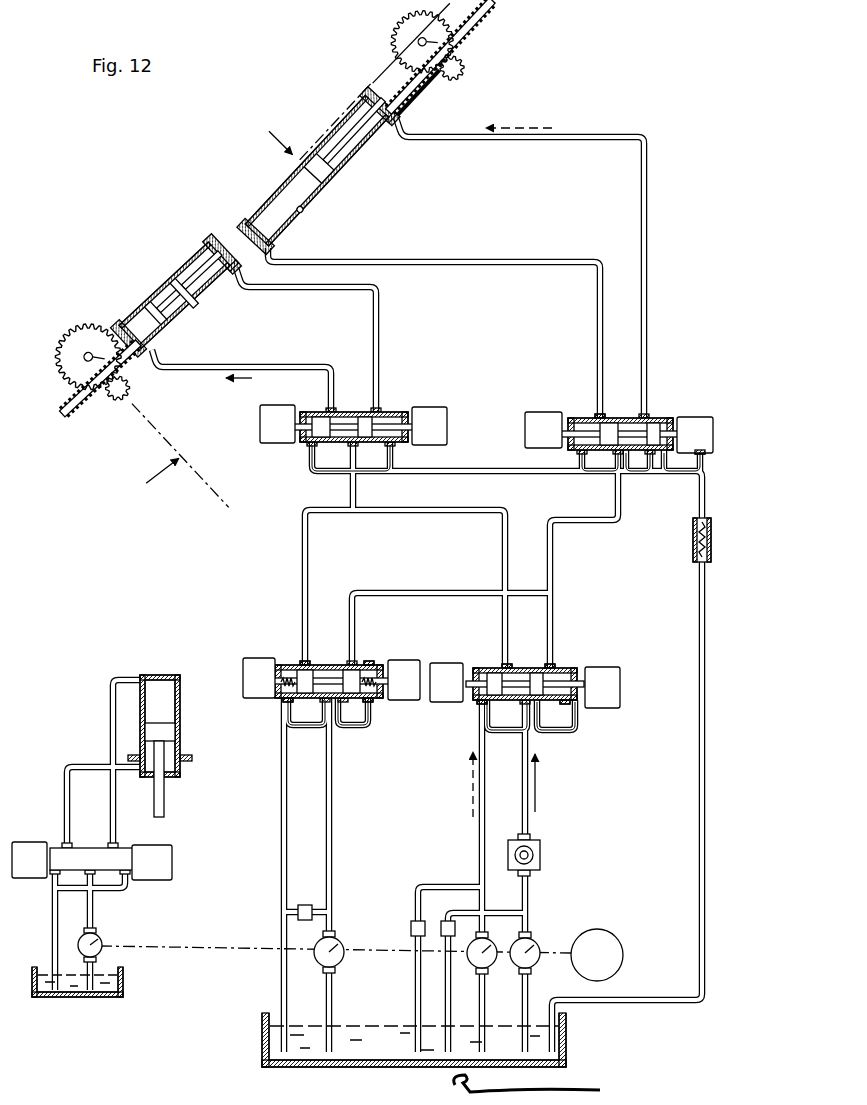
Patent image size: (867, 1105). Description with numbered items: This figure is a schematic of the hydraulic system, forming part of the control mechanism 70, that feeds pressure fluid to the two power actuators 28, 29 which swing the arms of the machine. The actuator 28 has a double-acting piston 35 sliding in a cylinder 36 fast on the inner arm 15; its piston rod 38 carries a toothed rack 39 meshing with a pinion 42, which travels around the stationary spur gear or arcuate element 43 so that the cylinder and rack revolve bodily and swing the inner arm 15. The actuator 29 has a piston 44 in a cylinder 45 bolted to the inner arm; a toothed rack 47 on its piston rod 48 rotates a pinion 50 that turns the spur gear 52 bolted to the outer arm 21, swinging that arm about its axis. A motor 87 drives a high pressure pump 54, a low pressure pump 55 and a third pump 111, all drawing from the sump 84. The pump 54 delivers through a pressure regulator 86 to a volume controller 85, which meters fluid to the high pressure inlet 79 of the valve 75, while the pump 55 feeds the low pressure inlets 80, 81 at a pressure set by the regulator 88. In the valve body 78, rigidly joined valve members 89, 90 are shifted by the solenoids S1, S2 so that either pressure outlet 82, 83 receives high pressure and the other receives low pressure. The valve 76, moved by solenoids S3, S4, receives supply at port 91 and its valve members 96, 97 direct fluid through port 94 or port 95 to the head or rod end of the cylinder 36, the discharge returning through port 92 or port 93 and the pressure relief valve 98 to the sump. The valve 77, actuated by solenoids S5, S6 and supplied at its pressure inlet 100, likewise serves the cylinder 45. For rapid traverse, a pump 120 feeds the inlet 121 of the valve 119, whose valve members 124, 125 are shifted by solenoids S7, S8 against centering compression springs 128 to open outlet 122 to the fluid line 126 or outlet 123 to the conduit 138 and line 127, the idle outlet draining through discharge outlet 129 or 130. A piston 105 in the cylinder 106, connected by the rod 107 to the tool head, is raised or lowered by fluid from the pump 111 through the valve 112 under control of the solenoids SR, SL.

The inner arm 15 is at (362, 97).
The outer arm 21 is at (206, 487).
The actuator 28 is at (274, 186).
The actuator 29 is at (159, 297).
The piston 35 is at (345, 178).
The cylinder 36 is at (306, 213).
The piston rod 38 is at (423, 90).
The toothed rack 39 is at (485, 25).
The pinion 42 is at (466, 75).
The arcuate element 43 is at (392, 40).
The piston 44 is at (200, 312).
The cylinder 45 is at (222, 290).
The toothed rack 47 is at (106, 408).
The piston rod 48 is at (150, 317).
The pinion 50 is at (134, 392).
The arcuate element 52 is at (62, 380).
The high pressure source 54 is at (534, 950).
The low pressure source 55 is at (488, 965).
The control mechanism 70 is at (694, 118).
The valve 75 is at (531, 671).
The valve 76 is at (632, 413).
The valve 77 is at (388, 404).
The valve body 78 is at (574, 704).
The high pressure inlet 79 is at (507, 716).
The low pressure inlet 80 is at (480, 705).
The low pressure inlet 81 is at (556, 716).
The pressure outlet 82 is at (505, 664).
The pressure outlet 83 is at (551, 664).
The sump 84 is at (568, 1046).
The volume controller 85 is at (542, 855).
The pressure regulator 86 is at (443, 921).
The motor 87 is at (604, 940).
The pressure regulator 88 is at (411, 930).
The valve member 89 is at (490, 673).
The valve member 90 is at (535, 673).
The port 91 is at (622, 455).
The port 92 is at (580, 455).
The port 93 is at (676, 452).
The port 94 is at (598, 414).
The port 95 is at (656, 420).
The valve member 96 is at (609, 421).
The valve member 97 is at (662, 455).
The pressure relief valve 98 is at (712, 548).
The pressure inlet 100 is at (350, 443).
The piston 105 is at (180, 737).
The cylinder 106 is at (180, 708).
The rod 107 is at (164, 808).
The third pump 111 is at (101, 943).
The valve 112 is at (130, 851).
The valve 119 is at (326, 665).
The pump 120 is at (339, 961).
The inlet 121 is at (306, 713).
The outlet 122 is at (300, 663).
The outlet 123 is at (366, 665).
The valve member 124 is at (315, 671).
The valve member 125 is at (350, 713).
The fluid line 126 is at (388, 514).
The line 127 is at (553, 577).
The compression springs 128 is at (281, 684).
The discharge outlet 129 is at (280, 701).
The discharge outlet 130 is at (374, 704).
The conduit 138 is at (440, 592).
The solenoid S1 is at (621, 677).
The solenoid S2 is at (443, 668).
The solenoid S3 is at (713, 437).
The solenoid S4 is at (530, 412).
The solenoid S5 is at (262, 425).
The solenoid S6 is at (447, 430).
The solenoid S7 is at (244, 666).
The solenoid S8 is at (409, 704).
The solenoid SR is at (37, 842).
The solenoid SL is at (173, 864).